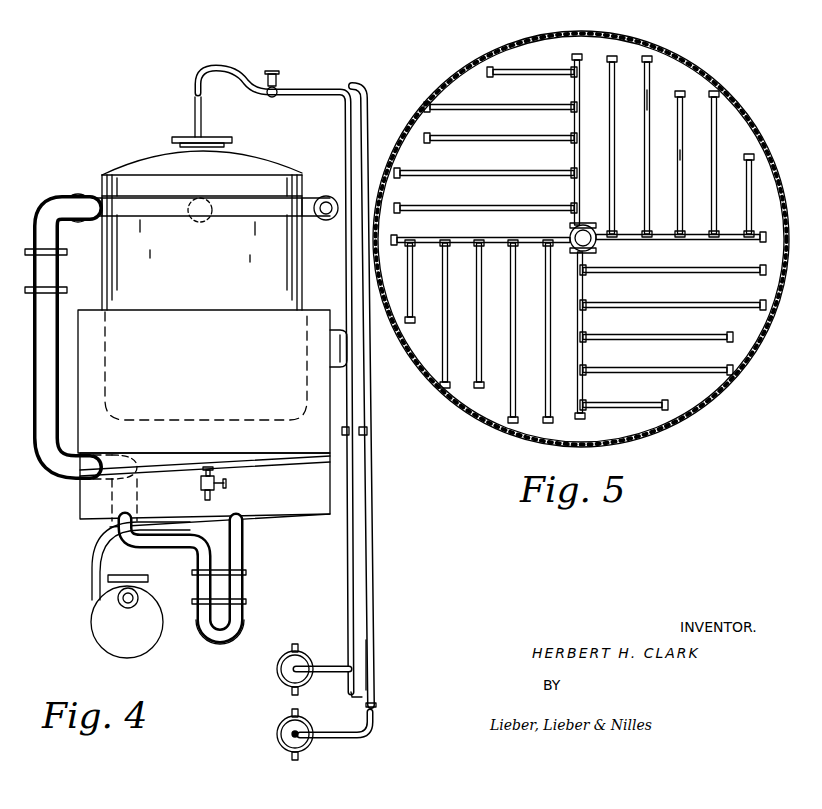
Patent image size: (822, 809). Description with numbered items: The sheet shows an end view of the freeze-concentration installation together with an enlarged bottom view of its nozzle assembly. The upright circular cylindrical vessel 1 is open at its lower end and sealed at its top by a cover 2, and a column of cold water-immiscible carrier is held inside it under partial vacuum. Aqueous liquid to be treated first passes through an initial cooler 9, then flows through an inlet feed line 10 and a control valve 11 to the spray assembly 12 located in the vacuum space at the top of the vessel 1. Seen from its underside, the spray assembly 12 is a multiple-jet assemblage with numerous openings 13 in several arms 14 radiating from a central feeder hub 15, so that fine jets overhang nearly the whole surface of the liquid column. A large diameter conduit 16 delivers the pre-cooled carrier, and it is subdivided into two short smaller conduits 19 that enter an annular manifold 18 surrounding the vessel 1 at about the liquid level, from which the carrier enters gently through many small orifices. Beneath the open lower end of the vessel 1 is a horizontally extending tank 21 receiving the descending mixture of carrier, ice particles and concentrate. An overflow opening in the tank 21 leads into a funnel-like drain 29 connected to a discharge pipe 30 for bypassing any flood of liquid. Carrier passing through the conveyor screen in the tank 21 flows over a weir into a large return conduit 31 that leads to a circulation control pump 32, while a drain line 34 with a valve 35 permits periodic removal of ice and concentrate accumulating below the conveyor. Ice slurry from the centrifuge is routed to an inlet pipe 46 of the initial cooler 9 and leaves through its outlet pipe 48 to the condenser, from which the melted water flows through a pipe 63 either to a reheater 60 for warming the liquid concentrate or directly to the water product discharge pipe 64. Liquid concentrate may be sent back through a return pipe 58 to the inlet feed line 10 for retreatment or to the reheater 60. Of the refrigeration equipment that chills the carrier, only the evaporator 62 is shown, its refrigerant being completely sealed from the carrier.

In FIG. 4, the vessel 1 is at (133, 162).
In FIG. 5, the vessel 1 is at (477, 64).
In FIG. 4, the cover 2 is at (188, 137).
In FIG. 4, the initial cooler 9 is at (300, 660).
In FIG. 4, the inlet feed line 10 is at (342, 118).
In FIG. 4, the control valve 11 is at (278, 86).
In FIG. 5, the spray assembly 12 is at (654, 105).
In FIG. 5, the openings 13 is at (682, 140).
In FIG. 5, the arms 14 is at (609, 56).
In FIG. 5, the central feeder hub 15 is at (598, 248).
In FIG. 4, the conduit 16 is at (50, 272).
In FIG. 4, the annular manifold 18 is at (303, 200).
In FIG. 4, the conduits 19 is at (80, 200).
In FIG. 4, the tank 21 is at (172, 328).
In FIG. 4, the drain 29 is at (333, 347).
In FIG. 4, the discharge pipe 30 is at (368, 666).
In FIG. 4, the return conduit 31 is at (205, 587).
In FIG. 4, the circulation control pump 32 is at (213, 636).
In FIG. 4, the drain line 34 is at (204, 495).
In FIG. 4, the valve 35 is at (201, 484).
In FIG. 4, the inlet pipe 46 is at (291, 694).
In FIG. 4, the outlet pipe 48 is at (291, 650).
In FIG. 4, the return pipe 58 is at (362, 106).
In FIG. 4, the reheater 60 is at (306, 728).
In FIG. 4, the evaporator 62 is at (95, 596).
In FIG. 4, the pipe 63 is at (291, 713).
In FIG. 4, the water product discharge pipe 64 is at (291, 752).